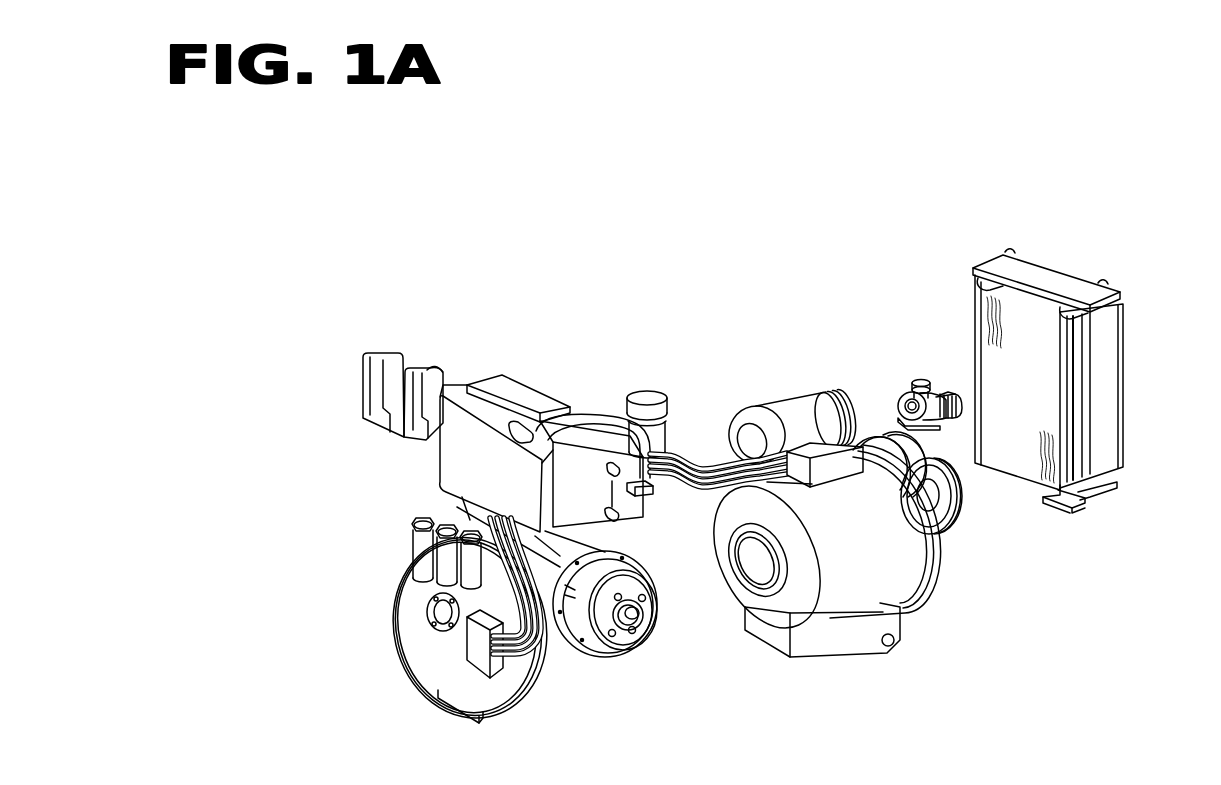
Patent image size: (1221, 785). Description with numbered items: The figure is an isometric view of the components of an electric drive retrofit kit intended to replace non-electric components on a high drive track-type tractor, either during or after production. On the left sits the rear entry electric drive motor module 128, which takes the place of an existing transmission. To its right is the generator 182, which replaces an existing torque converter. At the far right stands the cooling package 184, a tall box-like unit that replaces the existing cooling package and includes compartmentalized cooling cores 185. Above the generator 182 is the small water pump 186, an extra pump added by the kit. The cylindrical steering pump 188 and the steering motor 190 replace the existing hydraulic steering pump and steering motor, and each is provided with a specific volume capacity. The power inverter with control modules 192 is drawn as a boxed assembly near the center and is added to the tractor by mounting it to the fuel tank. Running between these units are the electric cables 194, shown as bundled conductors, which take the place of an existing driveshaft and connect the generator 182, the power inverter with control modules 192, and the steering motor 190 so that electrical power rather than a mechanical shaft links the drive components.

The rear entry electric drive motor module 128 is at (378, 543).
The generator 182 is at (867, 597).
The cooling package 184 is at (1067, 278).
The compartmentalized cooling cores 185 is at (1050, 468).
The water pump 186 is at (908, 376).
The steering pump 188 is at (766, 409).
The steering motor 190 is at (634, 397).
The power inverter with control modules 192 is at (448, 457).
The electric cables 194 is at (727, 480).